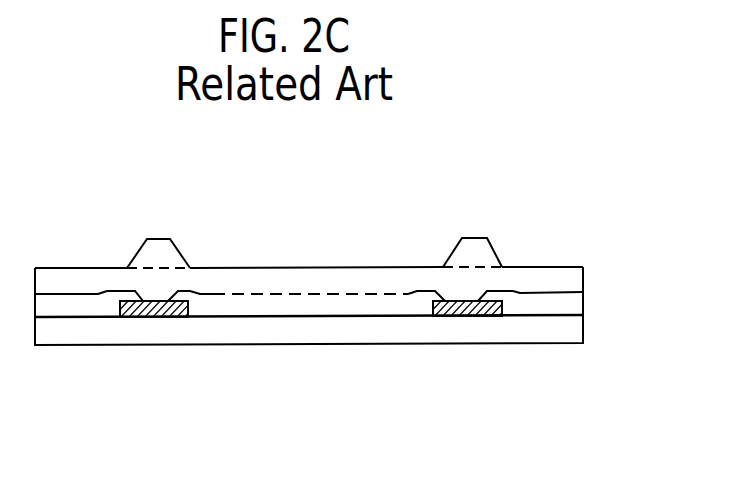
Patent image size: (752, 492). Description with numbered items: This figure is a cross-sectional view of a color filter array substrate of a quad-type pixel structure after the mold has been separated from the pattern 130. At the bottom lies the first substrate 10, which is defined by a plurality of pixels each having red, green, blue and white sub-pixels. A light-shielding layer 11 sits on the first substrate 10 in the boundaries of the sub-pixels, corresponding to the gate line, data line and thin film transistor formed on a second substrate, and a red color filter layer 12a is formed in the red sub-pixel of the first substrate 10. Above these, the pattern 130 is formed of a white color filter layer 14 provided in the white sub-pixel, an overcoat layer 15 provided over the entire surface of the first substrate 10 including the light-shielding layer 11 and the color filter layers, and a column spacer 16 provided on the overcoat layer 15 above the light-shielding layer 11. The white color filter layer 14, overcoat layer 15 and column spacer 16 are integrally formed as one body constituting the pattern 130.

The first substrate 10 is at (335, 330).
The light-shielding layer 11 is at (163, 304).
The red color filter layer 12a is at (75, 308).
The white color filter layer 14 is at (302, 305).
The overcoat layer 15 is at (263, 283).
The column spacer 16 is at (302, 192).
The pattern 130 is at (309, 223).